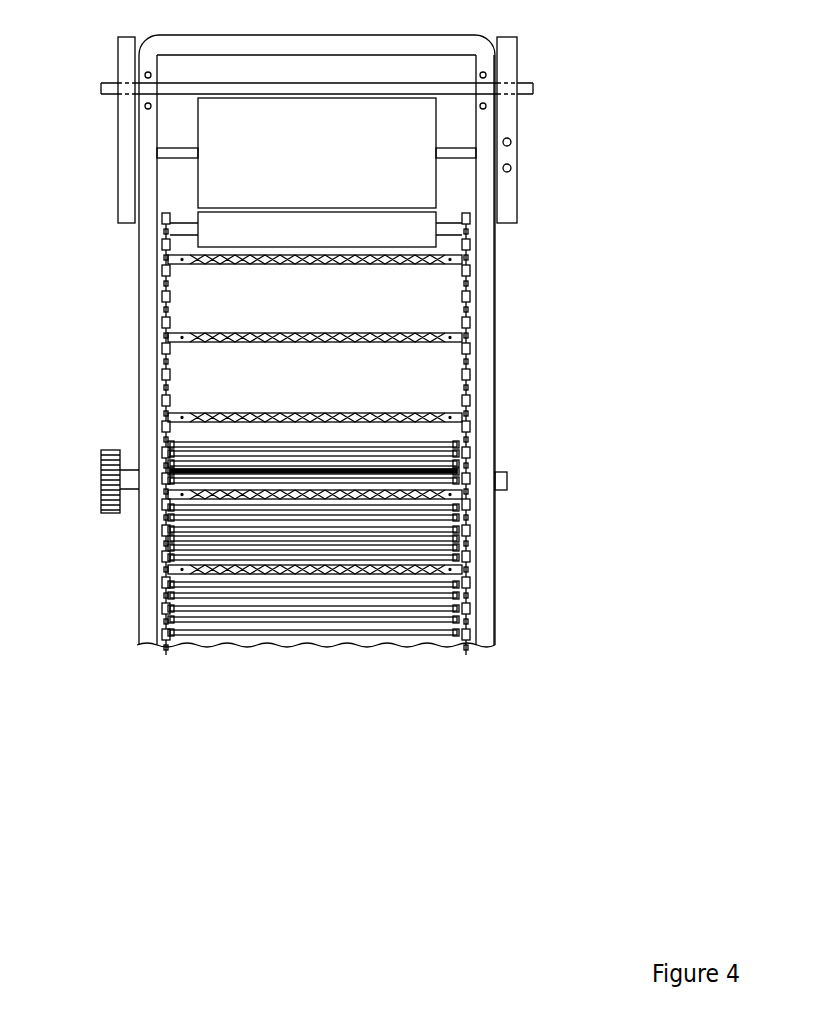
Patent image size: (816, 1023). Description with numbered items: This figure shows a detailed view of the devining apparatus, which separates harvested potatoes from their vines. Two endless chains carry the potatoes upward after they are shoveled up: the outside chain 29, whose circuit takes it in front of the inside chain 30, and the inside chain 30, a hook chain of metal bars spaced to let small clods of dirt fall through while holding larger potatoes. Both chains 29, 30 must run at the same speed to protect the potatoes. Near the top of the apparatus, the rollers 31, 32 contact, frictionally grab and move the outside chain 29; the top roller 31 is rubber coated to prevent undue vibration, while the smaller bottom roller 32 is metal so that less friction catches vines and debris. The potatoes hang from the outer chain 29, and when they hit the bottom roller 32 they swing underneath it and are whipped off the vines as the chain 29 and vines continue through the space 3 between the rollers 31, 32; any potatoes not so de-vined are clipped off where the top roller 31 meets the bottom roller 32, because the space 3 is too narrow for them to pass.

The space 3 is at (437, 212).
The outside chain 29 is at (471, 302).
The inside chain 30 is at (458, 447).
The top roller 31 is at (330, 166).
The bottom roller 32 is at (332, 241).